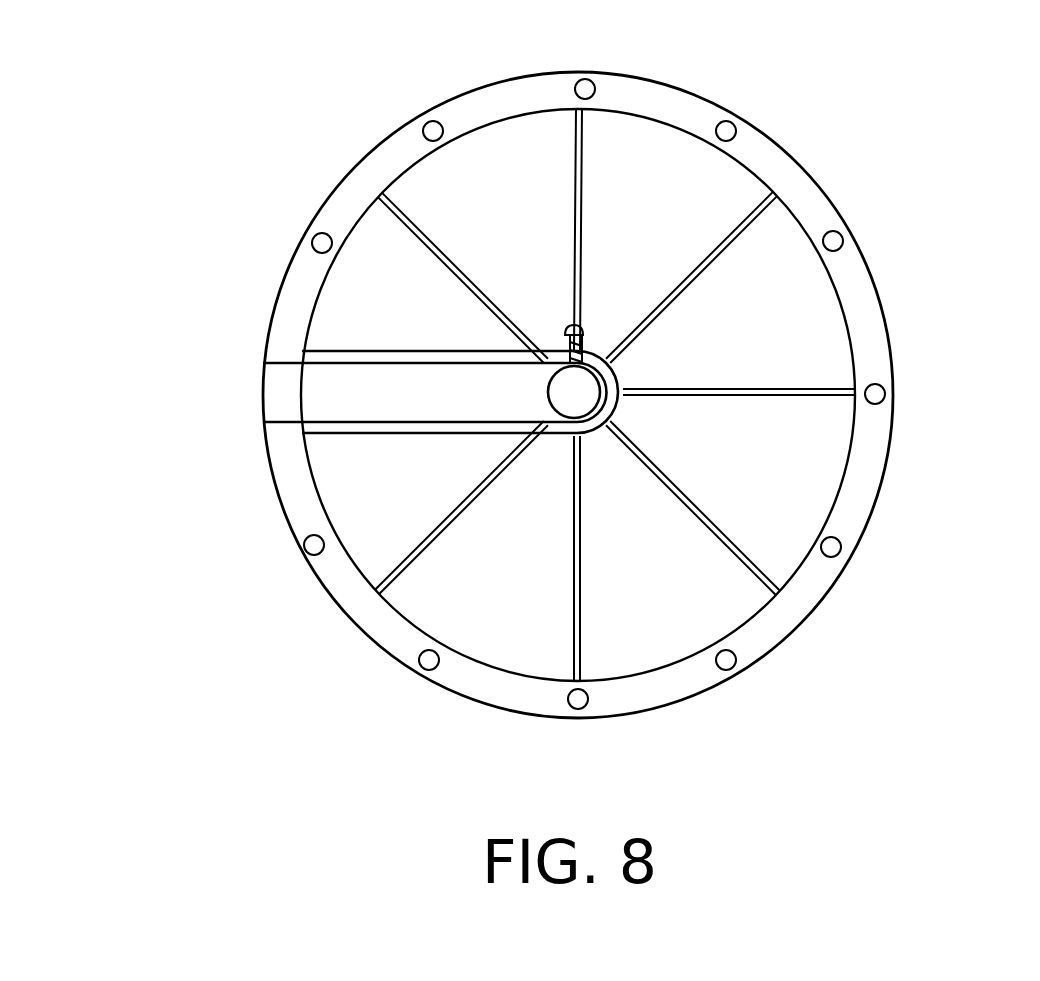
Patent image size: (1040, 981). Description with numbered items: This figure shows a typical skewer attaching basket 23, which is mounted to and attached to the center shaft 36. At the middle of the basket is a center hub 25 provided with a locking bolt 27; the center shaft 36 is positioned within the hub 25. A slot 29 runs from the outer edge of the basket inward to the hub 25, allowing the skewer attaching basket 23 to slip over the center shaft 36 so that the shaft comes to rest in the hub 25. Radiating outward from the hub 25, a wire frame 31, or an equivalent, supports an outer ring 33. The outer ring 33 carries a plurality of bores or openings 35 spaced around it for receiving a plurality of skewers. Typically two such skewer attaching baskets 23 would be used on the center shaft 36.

The skewer attaching basket 23 is at (925, 190).
The center hub 25 is at (613, 414).
The locking bolt 27 is at (565, 327).
The slot 29 is at (273, 378).
The wire frame 31 is at (793, 382).
The outer ring 33 is at (865, 470).
The bores or openings 35 is at (313, 545).
The center shaft 36 is at (548, 392).